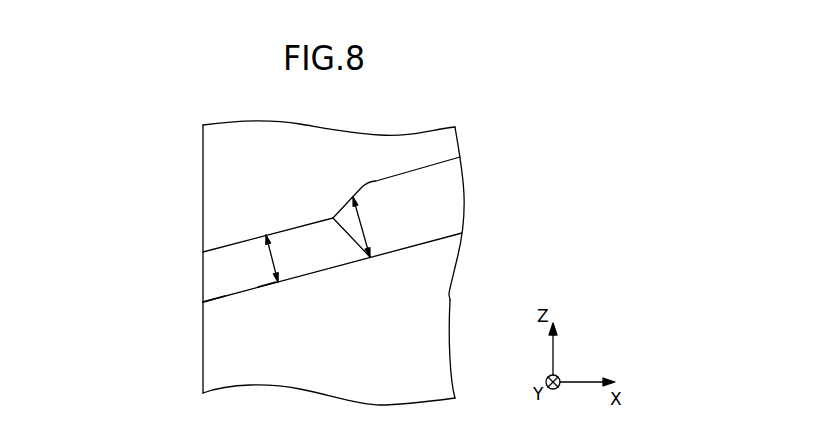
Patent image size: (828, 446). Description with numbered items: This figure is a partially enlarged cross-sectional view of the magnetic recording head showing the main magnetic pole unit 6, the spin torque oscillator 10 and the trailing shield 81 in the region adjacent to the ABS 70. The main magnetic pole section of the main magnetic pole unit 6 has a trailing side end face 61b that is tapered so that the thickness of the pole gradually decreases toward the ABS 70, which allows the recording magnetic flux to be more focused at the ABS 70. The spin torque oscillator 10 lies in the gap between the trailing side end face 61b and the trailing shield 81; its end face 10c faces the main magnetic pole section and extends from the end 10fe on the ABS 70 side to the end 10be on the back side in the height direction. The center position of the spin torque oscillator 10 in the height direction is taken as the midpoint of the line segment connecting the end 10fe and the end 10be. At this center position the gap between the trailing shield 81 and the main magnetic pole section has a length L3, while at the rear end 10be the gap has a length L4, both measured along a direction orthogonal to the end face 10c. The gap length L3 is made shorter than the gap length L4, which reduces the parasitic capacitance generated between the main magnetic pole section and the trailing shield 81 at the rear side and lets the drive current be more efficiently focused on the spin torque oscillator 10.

The trailing shield 81 is at (240, 172).
The ABS 70 is at (203, 227).
The spin torque oscillator 10 is at (213, 278).
The end on the ABS side of the end face 10fe is at (203, 302).
The trailing side end face 61b is at (259, 285).
The main magnetic pole unit 6 is at (223, 345).
The end face on the main magnetic pole section side 10c is at (267, 286).
The end on the back side in the height direction 10be is at (370, 258).
The gap length at the center position L3 is at (271, 257).
The gap length at the rear end L4 is at (363, 222).